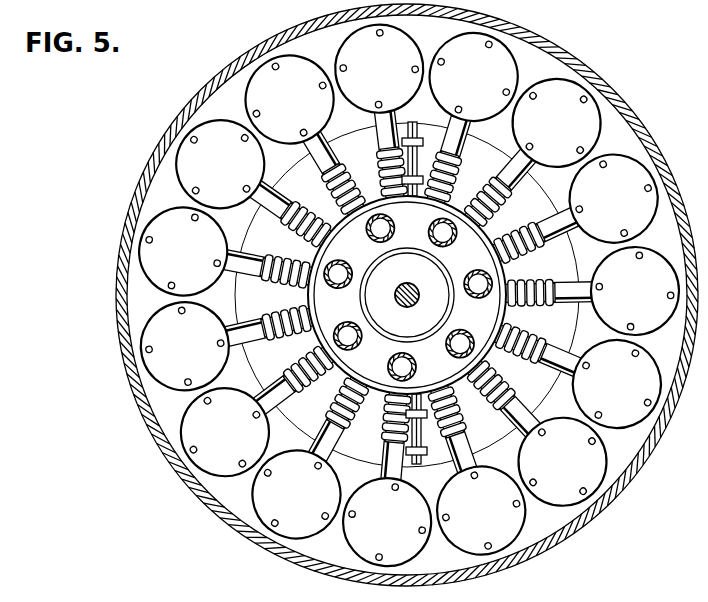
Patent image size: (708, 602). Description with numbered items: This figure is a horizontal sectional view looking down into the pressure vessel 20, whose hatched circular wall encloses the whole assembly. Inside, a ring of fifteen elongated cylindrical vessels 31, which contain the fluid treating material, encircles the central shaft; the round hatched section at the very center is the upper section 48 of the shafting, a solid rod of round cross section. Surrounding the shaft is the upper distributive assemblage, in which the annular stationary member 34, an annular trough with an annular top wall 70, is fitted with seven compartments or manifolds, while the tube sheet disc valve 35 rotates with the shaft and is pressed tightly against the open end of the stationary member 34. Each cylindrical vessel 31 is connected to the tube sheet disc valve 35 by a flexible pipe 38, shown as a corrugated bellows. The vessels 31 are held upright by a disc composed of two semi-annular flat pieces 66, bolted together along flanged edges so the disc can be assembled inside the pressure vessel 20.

The pressure vessel 20 is at (155, 189).
The cylindrical vessel 31 is at (268, 48).
The annular stationary member 34 is at (440, 307).
The tube sheet disc valve 35 is at (521, 247).
The flexible pipe 38 is at (462, 181).
The upper section 48 is at (419, 278).
The semi-annular flat piece 66 is at (314, 208).
The annular top wall 70 is at (313, 342).